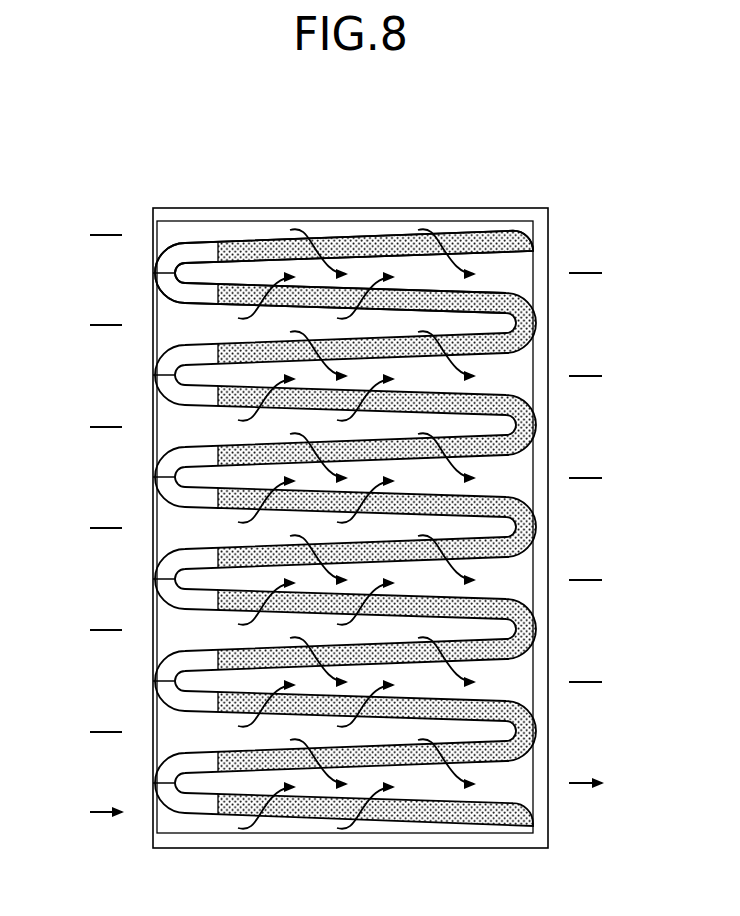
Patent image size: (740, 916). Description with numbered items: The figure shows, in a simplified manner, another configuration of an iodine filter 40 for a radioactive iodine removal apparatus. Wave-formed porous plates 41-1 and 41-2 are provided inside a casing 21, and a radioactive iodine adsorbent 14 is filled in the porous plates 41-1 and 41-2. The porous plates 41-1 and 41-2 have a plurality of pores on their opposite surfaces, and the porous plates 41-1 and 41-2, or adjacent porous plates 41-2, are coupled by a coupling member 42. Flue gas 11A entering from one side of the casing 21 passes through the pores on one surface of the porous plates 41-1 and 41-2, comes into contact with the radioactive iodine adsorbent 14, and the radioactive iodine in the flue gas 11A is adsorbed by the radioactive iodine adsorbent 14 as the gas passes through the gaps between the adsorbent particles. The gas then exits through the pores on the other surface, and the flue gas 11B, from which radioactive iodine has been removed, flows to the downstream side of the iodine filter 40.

The casing 21 is at (181, 213).
The iodine filter 40 is at (345, 465).
The porous plate 41-1 is at (262, 241).
The radioactive iodine adsorbent 14 is at (340, 239).
The porous plate 41-2 is at (228, 145).
The coupling member 42 is at (162, 261).
The flue gas 11A is at (102, 427).
The flue gas 11B is at (588, 478).